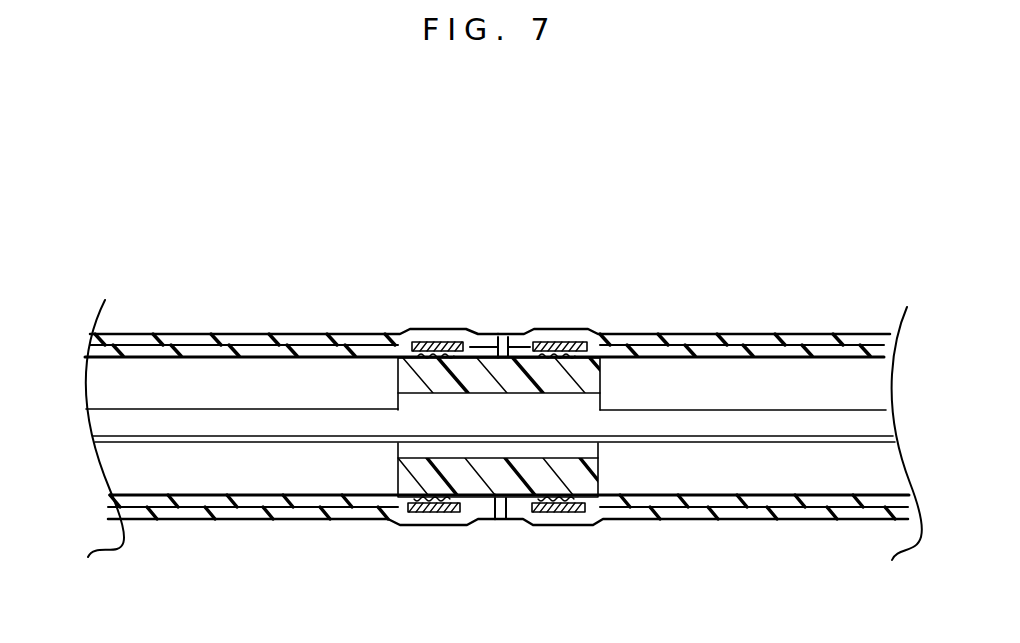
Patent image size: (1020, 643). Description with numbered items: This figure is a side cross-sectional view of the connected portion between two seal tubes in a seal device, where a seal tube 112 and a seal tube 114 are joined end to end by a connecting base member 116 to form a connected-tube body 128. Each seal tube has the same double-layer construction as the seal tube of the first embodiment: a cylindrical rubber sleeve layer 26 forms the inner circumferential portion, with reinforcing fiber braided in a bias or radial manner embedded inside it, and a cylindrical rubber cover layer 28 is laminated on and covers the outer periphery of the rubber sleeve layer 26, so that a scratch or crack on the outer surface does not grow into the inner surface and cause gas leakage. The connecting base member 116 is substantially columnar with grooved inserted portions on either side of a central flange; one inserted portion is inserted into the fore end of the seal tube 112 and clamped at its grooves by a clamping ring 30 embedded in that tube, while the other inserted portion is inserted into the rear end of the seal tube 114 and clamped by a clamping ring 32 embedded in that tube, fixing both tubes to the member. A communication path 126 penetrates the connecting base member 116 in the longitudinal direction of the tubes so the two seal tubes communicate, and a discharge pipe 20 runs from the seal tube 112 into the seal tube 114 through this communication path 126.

The discharge pipe 20 is at (250, 443).
The rubber sleeve layer 26 is at (313, 348).
The rubber cover layer 28 is at (133, 338).
The clamping ring 30 is at (571, 342).
The clamping ring 32 is at (430, 342).
The seal tube 112 is at (752, 335).
The seal tube 114 is at (248, 337).
The connecting base member 116 is at (600, 378).
The communication path 126 is at (412, 410).
The connected-tube body 128 is at (545, 554).